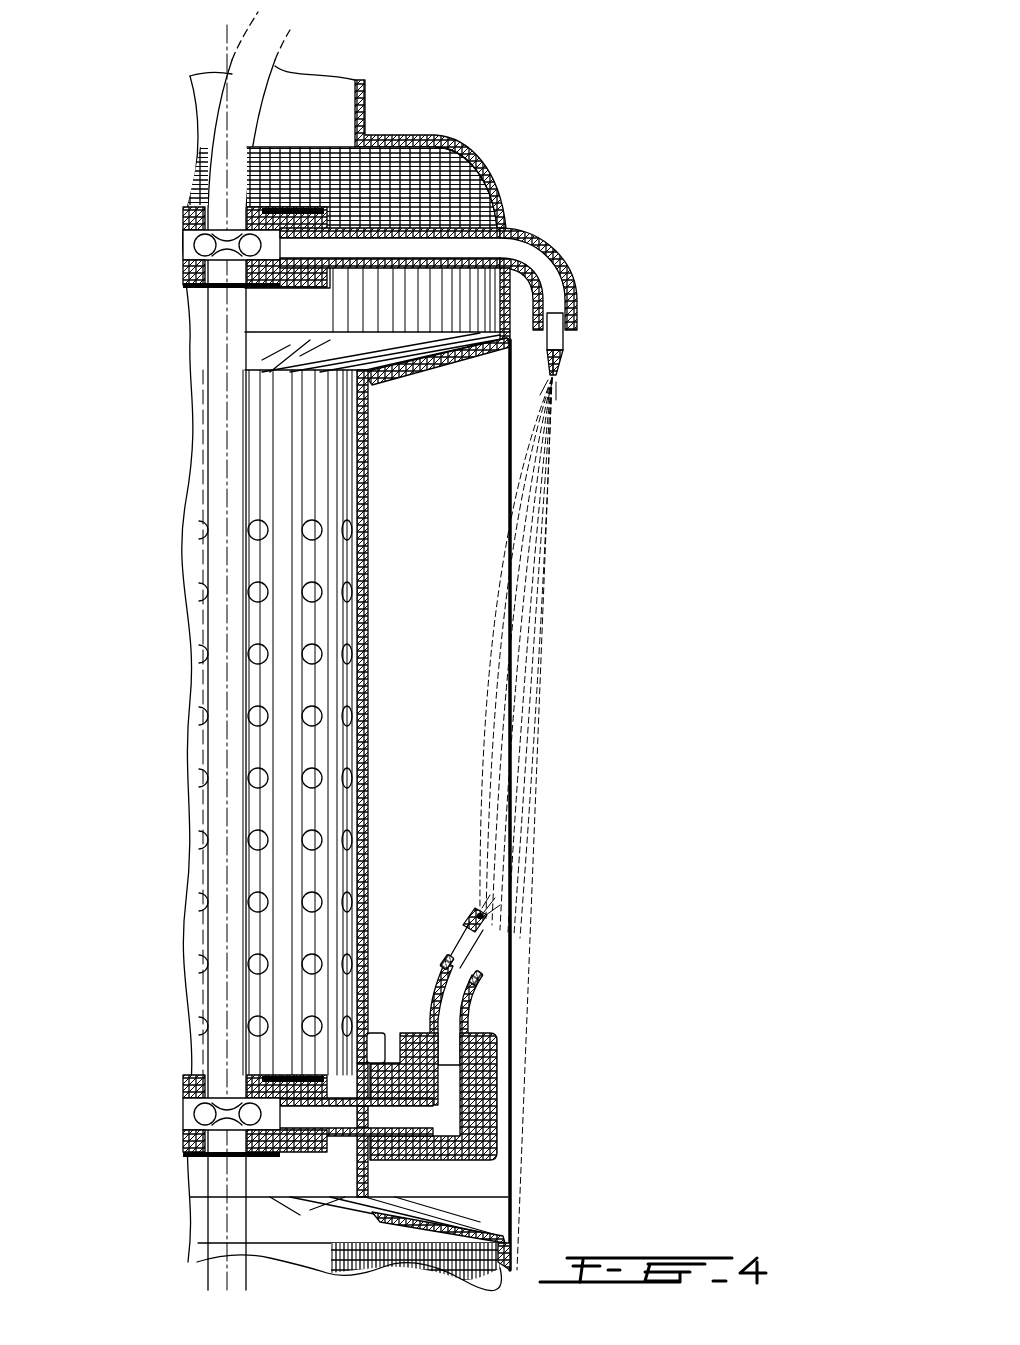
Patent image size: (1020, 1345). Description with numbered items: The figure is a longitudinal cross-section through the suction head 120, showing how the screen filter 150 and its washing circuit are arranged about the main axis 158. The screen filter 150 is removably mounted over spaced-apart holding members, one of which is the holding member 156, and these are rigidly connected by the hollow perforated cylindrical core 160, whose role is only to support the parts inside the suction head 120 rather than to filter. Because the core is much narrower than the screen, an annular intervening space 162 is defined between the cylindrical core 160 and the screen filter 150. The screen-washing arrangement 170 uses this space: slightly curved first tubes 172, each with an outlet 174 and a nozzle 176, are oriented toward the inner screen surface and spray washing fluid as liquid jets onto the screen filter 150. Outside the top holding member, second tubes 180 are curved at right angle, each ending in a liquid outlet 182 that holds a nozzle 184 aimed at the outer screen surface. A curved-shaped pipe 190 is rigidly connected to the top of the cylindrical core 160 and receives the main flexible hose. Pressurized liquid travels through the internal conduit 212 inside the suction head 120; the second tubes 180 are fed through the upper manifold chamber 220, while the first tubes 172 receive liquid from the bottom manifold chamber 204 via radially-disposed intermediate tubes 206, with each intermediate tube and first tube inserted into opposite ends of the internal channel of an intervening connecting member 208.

The suction head 120 is at (620, 158).
The screen filter 150 is at (515, 680).
The holding member 156 is at (270, 1253).
The main axis 158 is at (230, 58).
The cylindrical core 160 is at (262, 806).
The annular intervening space 162 is at (442, 615).
The screen-washing arrangement 170 is at (457, 1178).
The first tubes 172 is at (482, 1000).
The outlets 174 is at (492, 963).
The nozzles 176 is at (458, 940).
The second tubes 180 is at (565, 236).
The liquid outlet 182 is at (577, 318).
The nozzle 184 is at (565, 368).
The curved-shaped pipe 190 is at (368, 100).
The bottom manifold chamber 204 is at (186, 1106).
The radially-disposed intermediate tubes 206 is at (440, 1115).
The intervening connecting member 208 is at (480, 1096).
The internal conduit 212 is at (215, 432).
The upper manifold chamber 220 is at (186, 235).